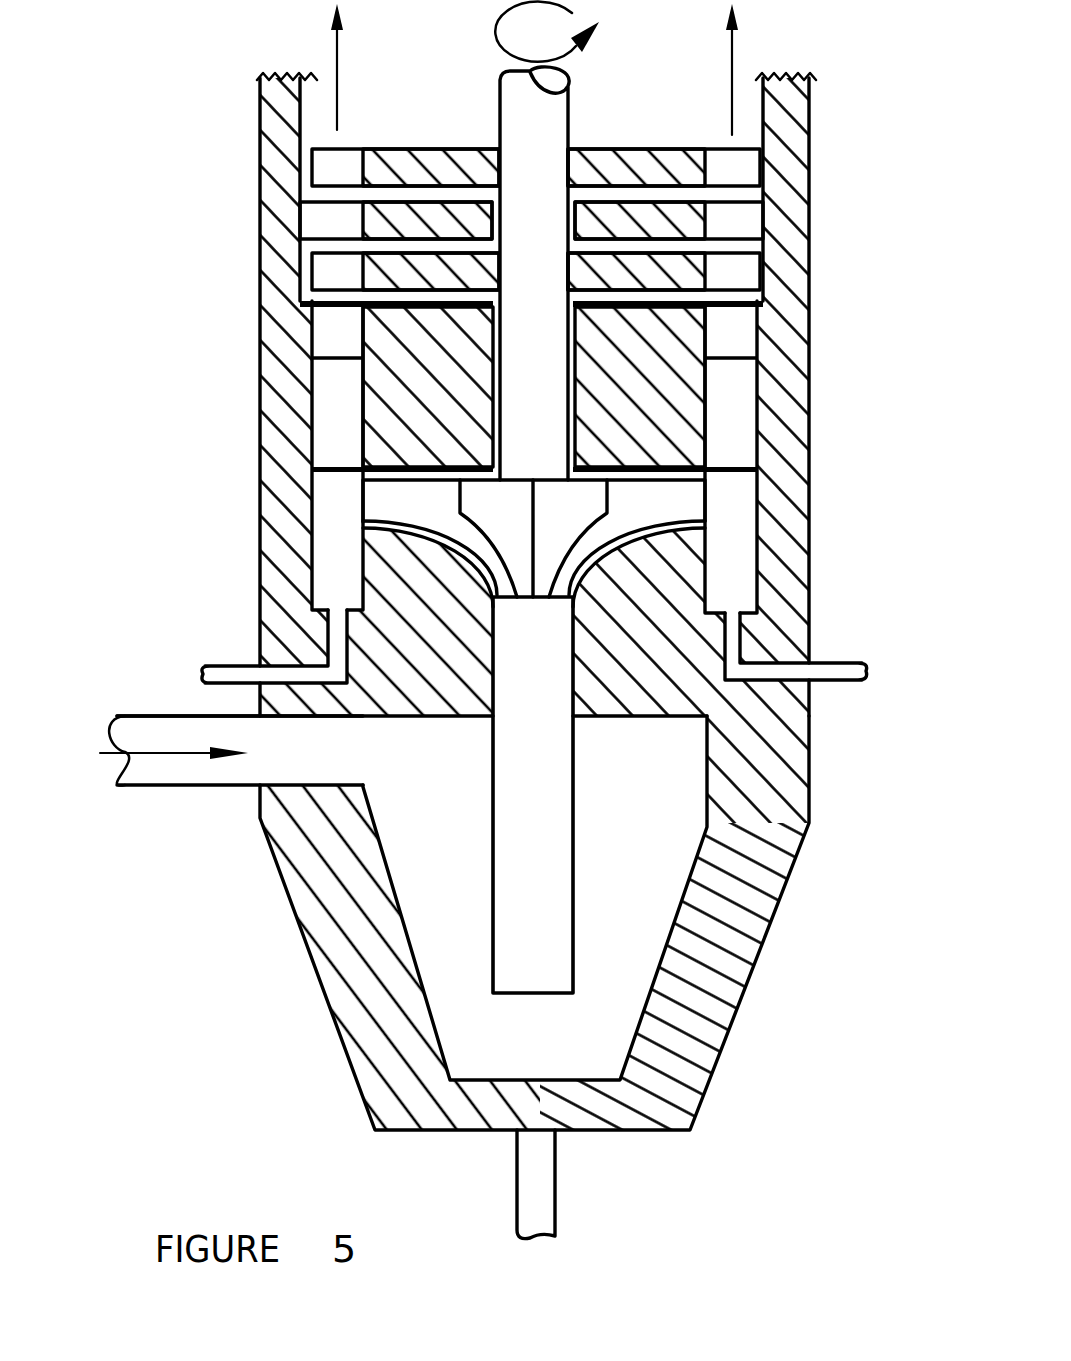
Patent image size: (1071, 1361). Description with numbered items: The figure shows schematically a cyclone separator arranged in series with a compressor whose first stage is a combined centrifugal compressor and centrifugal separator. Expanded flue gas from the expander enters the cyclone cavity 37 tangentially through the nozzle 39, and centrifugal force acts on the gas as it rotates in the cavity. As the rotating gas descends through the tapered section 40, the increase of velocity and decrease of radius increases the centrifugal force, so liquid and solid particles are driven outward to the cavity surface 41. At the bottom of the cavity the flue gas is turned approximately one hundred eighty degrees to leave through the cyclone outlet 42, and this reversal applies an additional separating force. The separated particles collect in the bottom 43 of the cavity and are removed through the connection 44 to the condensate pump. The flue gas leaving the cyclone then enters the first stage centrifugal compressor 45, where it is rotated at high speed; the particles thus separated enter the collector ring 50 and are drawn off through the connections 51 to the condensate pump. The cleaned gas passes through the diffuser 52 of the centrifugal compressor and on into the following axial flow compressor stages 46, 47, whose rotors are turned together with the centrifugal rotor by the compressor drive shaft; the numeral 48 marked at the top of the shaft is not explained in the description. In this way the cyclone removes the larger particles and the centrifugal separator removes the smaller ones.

The cyclone cavity 37 is at (653, 795).
The nozzle 39 is at (262, 763).
The tapered section 40 is at (670, 930).
The cavity surface 41 is at (407, 968).
The cyclone outlet 42 is at (515, 857).
The bottom 43 is at (473, 1067).
The connection 44 is at (538, 1208).
The first stage centrifugal compressor 45 is at (652, 510).
The axial flow compressor stage 46 is at (723, 275).
The axial flow compressor stage 47 is at (728, 170).
The rotating shaft 48 is at (548, 112).
The collector ring 50 is at (725, 597).
The connections 51 is at (888, 710).
The diffuser 52 is at (842, 362).